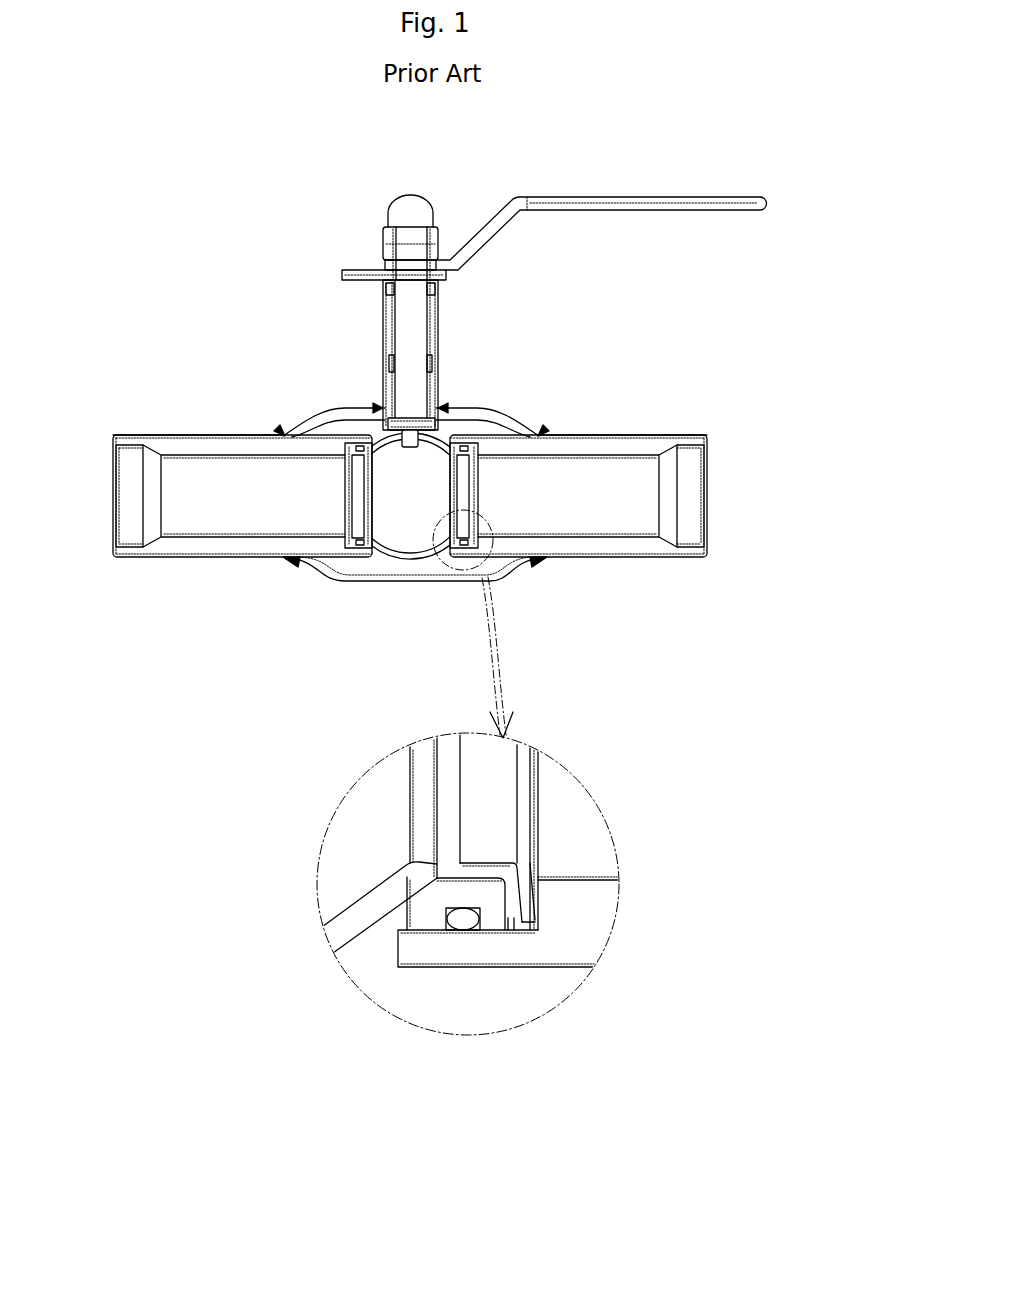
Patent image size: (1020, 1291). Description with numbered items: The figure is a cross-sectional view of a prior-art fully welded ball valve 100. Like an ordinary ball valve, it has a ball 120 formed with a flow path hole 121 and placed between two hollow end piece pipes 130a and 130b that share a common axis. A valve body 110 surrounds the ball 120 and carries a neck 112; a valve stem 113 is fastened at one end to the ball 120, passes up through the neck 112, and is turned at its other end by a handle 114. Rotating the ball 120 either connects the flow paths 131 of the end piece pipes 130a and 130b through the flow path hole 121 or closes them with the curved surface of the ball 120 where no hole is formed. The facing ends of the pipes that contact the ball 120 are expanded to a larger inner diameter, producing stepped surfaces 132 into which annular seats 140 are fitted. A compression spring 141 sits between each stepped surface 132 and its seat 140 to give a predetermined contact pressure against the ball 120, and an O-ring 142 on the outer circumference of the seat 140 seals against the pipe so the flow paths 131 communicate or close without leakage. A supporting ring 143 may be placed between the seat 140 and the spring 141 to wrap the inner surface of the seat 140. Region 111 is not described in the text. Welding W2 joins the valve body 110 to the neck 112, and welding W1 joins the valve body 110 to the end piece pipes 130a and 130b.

The fully welded ball valve 100 is at (154, 245).
The valve body 110 is at (322, 410).
The pipe connection portion 111 is at (243, 435).
The neck 112 is at (440, 303).
The valve stem 113 is at (413, 325).
The handle 114 is at (640, 195).
The ball 120 is at (387, 560).
The flow path hole 121 is at (400, 510).
The end piece pipe 130a is at (172, 557).
The end piece pipe 130b is at (653, 557).
The flow path 131 is at (235, 512).
The stepped surface 132 is at (537, 905).
The annular seat 140 is at (428, 915).
The compression spring 141 is at (530, 918).
The O-ring 142 is at (463, 920).
The supporting ring 143 is at (510, 920).
The welding W1 is at (278, 430).
The welding W2 is at (376, 406).